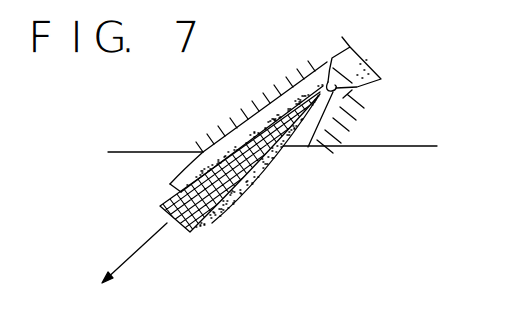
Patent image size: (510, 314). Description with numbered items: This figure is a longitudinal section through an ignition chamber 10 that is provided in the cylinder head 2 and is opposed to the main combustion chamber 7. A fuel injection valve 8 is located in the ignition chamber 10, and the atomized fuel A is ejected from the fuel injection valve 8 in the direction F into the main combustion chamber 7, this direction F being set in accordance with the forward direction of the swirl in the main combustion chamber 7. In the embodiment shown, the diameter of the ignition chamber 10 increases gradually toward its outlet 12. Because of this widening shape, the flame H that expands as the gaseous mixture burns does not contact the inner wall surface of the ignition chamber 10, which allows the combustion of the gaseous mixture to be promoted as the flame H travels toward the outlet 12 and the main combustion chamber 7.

The cylinder head 2 is at (257, 99).
The main combustion chamber 7 is at (174, 172).
The fuel injection valve 8 is at (362, 68).
The ignition chamber 10 is at (338, 96).
The outlet 12 is at (300, 147).
The atomized fuel A is at (212, 198).
The flame H is at (250, 178).
The direction of fuel ejection F is at (119, 255).